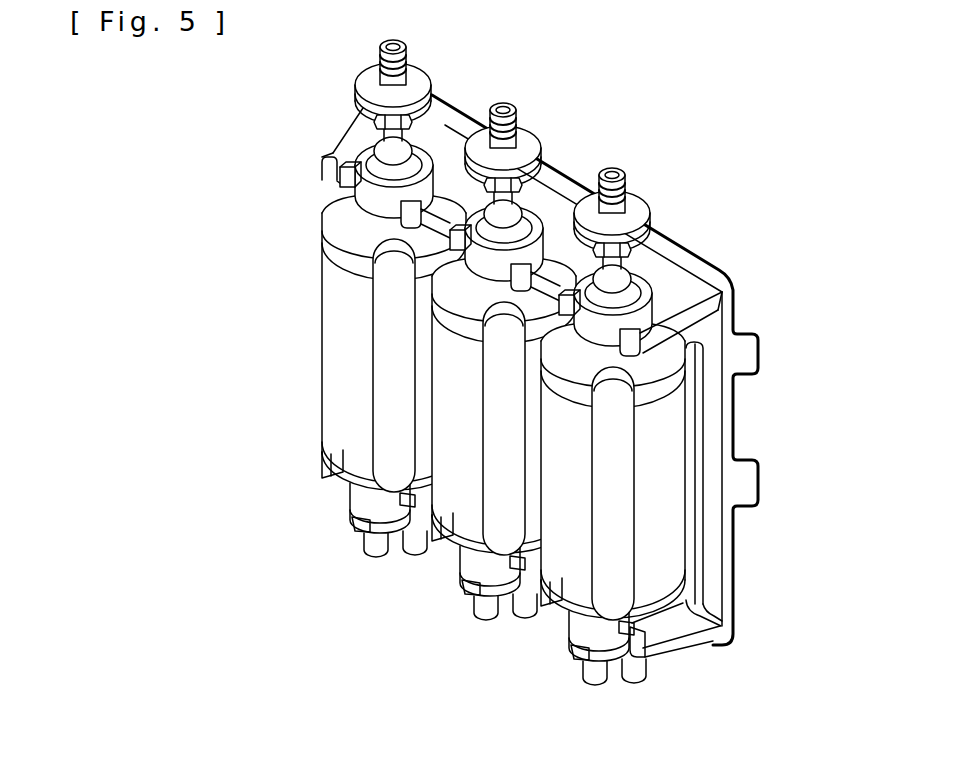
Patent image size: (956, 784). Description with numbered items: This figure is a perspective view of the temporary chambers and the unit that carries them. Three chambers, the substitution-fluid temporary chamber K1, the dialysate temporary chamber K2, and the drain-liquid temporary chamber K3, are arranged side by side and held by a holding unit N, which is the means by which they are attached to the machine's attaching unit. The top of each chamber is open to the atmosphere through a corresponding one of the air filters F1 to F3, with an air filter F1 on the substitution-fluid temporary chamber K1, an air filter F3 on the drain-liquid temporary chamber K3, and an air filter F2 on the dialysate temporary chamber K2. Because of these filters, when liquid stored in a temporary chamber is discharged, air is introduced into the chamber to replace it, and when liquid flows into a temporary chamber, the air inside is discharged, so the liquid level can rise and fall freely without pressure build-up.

The substitution-fluid temporary chamber K1 is at (335, 351).
The drain-liquid temporary chamber K3 is at (440, 416).
The dialysate temporary chamber K2 is at (665, 429).
The air filter F1 is at (365, 89).
The air filter F3 is at (540, 143).
The air filter F2 is at (642, 209).
The holding unit N is at (720, 610).